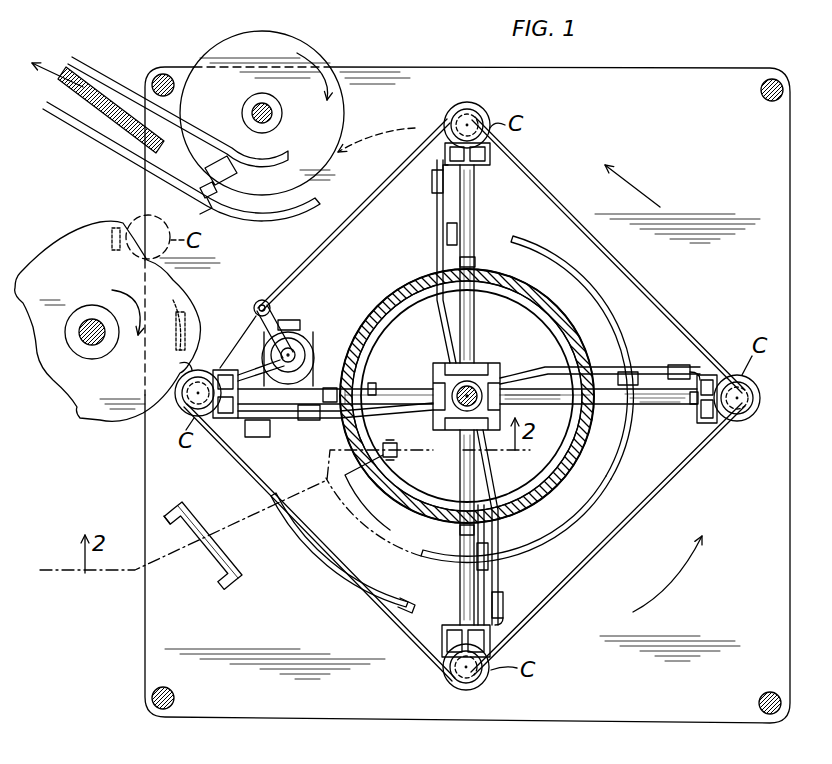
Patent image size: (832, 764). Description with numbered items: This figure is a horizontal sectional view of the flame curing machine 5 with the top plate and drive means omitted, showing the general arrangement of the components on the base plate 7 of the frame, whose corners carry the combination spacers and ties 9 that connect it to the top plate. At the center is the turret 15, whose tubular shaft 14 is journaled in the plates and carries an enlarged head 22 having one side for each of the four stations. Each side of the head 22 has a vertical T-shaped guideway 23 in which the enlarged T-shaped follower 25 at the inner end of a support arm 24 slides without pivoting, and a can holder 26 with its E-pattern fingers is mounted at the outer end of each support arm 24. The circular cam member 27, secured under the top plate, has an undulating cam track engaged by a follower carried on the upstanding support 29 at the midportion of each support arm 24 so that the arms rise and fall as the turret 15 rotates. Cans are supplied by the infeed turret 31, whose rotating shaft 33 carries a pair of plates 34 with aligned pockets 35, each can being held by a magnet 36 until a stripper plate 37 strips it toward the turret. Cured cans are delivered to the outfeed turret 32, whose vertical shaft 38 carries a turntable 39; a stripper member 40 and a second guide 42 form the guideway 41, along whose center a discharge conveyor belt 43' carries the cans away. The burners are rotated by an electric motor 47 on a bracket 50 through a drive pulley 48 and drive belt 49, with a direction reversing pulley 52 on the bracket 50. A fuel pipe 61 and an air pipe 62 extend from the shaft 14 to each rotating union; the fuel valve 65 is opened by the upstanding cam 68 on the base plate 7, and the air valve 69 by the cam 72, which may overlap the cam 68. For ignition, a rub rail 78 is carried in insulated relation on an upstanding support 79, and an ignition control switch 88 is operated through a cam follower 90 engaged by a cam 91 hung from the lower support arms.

The flame curing machine 5 is at (432, 70).
The base plate 7 is at (645, 717).
The combination spacers and ties 9 is at (170, 76).
The tubular shaft 14 is at (478, 392).
The turret 15 is at (655, 216).
The enlarged head 22 is at (505, 384).
The T-shaped guideway 23 is at (474, 368).
The support arm 24 is at (415, 386).
The T-shaped follower 25 is at (440, 372).
The can holder 26 is at (234, 370).
The cam member 27 is at (535, 489).
The upstanding support 29 is at (477, 263).
The infeed turret 31 is at (57, 227).
The outfeed turret 32 is at (332, 51).
The rotating shaft 33 is at (100, 341).
The plates 34 is at (88, 417).
The pockets 35 is at (120, 247).
The magnet 36 is at (190, 341).
The stripper plate 37 is at (170, 396).
The vertical shaft 38 is at (272, 121).
The turntable 39 is at (342, 105).
The stripper member 40 is at (275, 219).
The guideway 41 is at (113, 154).
The second guide 42 is at (98, 61).
The discharge conveyor belt 43' is at (93, 108).
The electric motor 47 is at (310, 331).
The drive pulley 48 is at (300, 349).
The drive belt 49 is at (657, 574).
The bracket 50 is at (290, 320).
The direction reversing pulley 52 is at (260, 300).
The fuel pipe 61 is at (437, 249).
The air pipe 62 is at (470, 311).
The valve 65 is at (432, 186).
The upstanding cam 68 is at (350, 578).
The valve 69 is at (447, 236).
The cam 72 is at (550, 541).
The rub rail 78 is at (238, 564).
The upstanding support 79 is at (175, 515).
The ignition control switch 88 is at (397, 453).
The cam follower 90 is at (372, 466).
The cam 91 is at (373, 383).